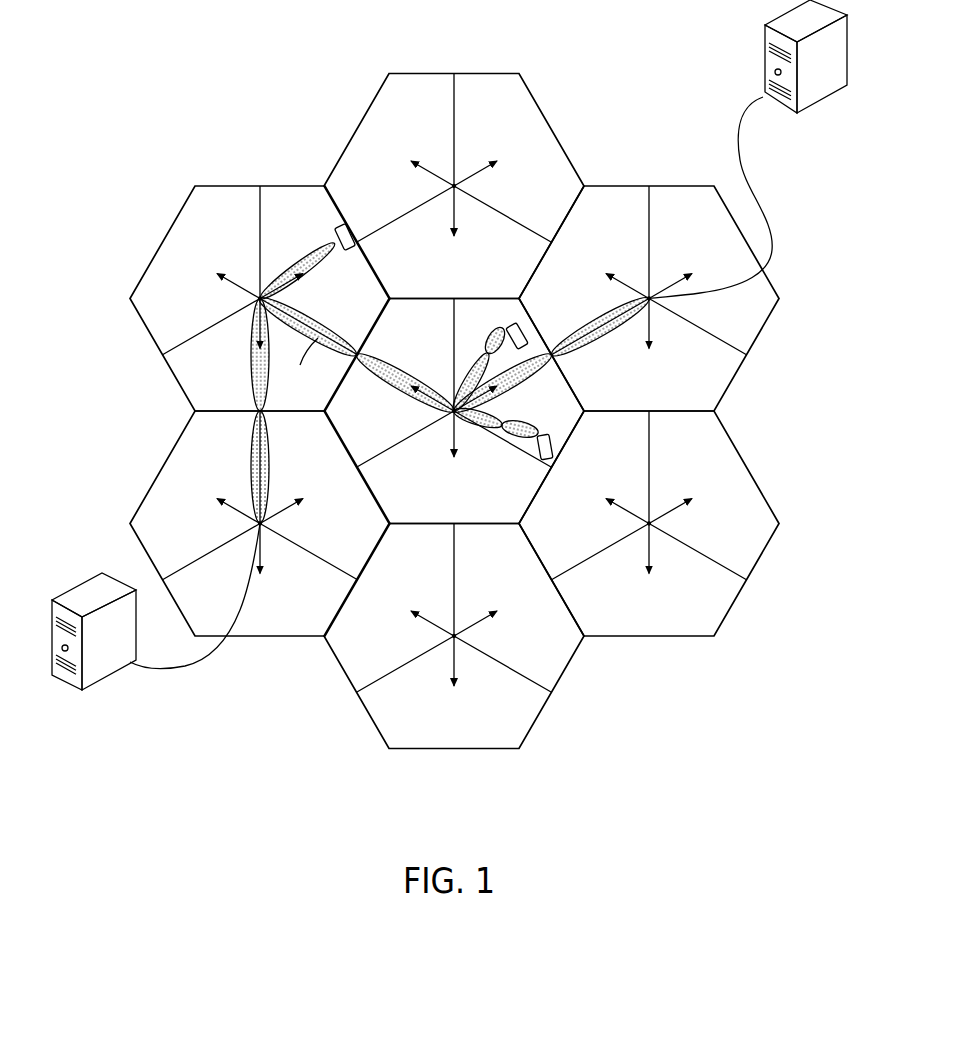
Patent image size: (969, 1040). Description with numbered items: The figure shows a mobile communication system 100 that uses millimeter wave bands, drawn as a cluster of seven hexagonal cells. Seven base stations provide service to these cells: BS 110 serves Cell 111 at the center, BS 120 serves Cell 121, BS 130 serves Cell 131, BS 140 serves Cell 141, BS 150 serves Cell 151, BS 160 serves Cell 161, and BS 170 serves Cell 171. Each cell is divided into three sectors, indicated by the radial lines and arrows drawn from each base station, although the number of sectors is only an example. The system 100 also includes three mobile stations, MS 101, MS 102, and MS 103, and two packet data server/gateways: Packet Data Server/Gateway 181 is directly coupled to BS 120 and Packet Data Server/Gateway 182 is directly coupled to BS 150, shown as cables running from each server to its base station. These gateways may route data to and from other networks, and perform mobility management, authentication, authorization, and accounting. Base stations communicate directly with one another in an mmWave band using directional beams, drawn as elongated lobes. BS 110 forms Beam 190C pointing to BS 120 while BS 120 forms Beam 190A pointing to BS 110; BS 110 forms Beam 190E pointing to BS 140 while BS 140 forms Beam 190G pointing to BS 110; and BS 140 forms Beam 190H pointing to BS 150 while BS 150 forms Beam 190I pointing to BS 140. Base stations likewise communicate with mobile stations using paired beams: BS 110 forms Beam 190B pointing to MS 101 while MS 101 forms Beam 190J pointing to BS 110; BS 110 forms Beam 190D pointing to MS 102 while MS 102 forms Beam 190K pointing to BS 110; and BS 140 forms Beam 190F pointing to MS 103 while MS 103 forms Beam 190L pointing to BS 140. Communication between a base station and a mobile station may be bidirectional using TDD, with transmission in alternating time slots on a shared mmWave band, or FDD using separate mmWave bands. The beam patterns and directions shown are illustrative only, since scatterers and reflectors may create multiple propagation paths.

The mobile communication system 100 is at (268, 48).
The MS 101 is at (556, 452).
The MS 102 is at (514, 326).
The MS 103 is at (345, 226).
The BS 110 is at (454, 411).
The Cell 111 is at (430, 523).
The BS 120 is at (649, 298).
The Cell 121 is at (632, 186).
The BS 130 is at (454, 186).
The Cell 131 is at (470, 74).
The BS 140 is at (260, 298).
The Cell 141 is at (240, 186).
The BS 150 is at (260, 523).
The Cell 151 is at (275, 636).
The BS 160 is at (454, 636).
The Cell 161 is at (455, 748).
The BS 170 is at (649, 523).
The Cell 171 is at (650, 636).
The Packet Data Server/Gateway 181 is at (808, 108).
The Packet Data Server/Gateway 182 is at (85, 585).
The Beam 190A is at (577, 331).
The Beam 190B is at (488, 430).
The Beam 190C is at (540, 370).
The Beam 190D is at (470, 367).
The Beam 190E is at (392, 362).
The Beam 190F is at (290, 307).
The Beam 190G is at (300, 362).
The Beam 190H is at (257, 383).
The Beam 190I is at (270, 466).
The Beam 190J is at (533, 427).
The Beam 190K is at (491, 330).
The Beam 190L is at (317, 238).